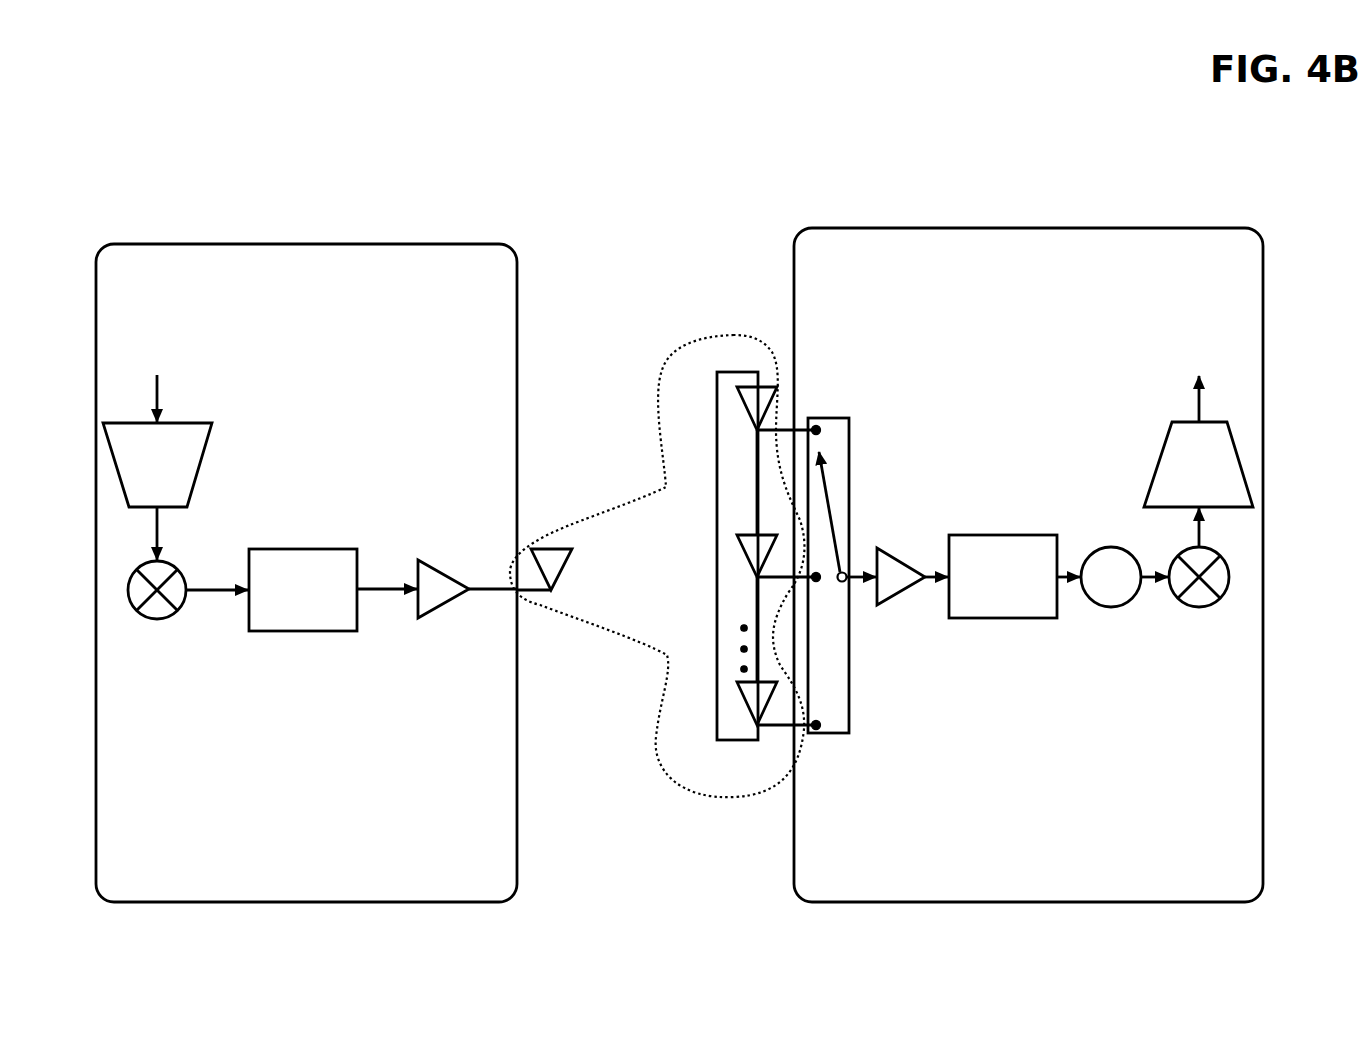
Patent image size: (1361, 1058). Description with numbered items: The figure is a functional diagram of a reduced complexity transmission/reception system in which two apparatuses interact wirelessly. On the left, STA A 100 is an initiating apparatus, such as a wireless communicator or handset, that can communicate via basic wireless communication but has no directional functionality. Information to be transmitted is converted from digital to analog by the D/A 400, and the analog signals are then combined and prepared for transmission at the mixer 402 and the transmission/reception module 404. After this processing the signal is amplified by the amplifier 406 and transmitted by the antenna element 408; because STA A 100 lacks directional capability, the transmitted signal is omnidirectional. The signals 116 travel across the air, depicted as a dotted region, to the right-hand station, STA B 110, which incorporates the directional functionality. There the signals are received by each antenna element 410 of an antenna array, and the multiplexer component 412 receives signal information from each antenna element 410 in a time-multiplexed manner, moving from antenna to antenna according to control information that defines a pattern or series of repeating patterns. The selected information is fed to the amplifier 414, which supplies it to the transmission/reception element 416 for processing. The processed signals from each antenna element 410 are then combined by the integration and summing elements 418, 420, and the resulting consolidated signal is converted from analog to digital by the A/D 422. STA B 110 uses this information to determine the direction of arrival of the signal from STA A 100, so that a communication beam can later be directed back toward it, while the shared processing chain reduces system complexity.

The STA A 100 is at (94, 382).
The STA B 110 is at (1266, 364).
The signals 116 is at (678, 783).
The D/A 400 is at (193, 421).
The signal combining element 402 is at (178, 612).
The transmission/reception module 404 is at (307, 548).
The amplifier 406 is at (448, 578).
The antenna element 408 is at (570, 563).
The antenna element 410 is at (746, 422).
The multiplexer component 412 is at (850, 705).
The amplifier 414 is at (892, 555).
The transmission/reception element 416 is at (1008, 534).
The summing element 418 is at (1132, 600).
The integration element 420 is at (1226, 560).
The A/D 422 is at (1162, 446).